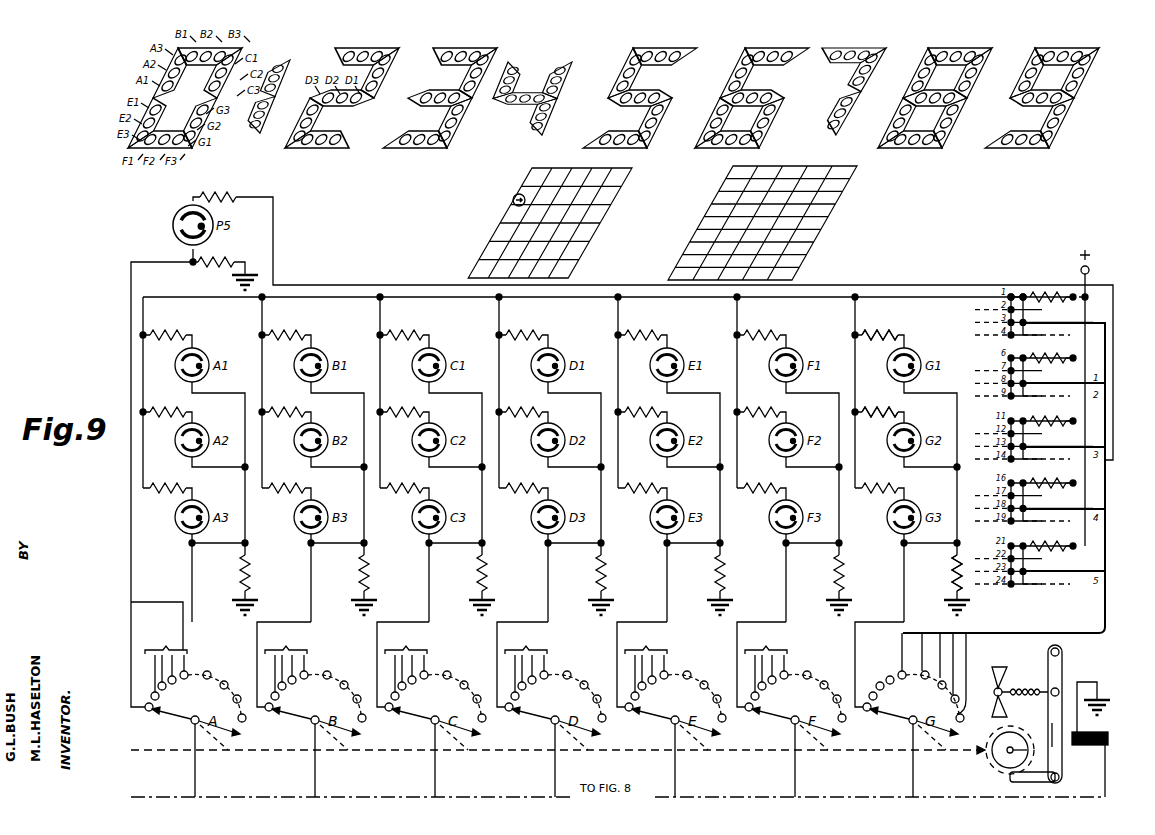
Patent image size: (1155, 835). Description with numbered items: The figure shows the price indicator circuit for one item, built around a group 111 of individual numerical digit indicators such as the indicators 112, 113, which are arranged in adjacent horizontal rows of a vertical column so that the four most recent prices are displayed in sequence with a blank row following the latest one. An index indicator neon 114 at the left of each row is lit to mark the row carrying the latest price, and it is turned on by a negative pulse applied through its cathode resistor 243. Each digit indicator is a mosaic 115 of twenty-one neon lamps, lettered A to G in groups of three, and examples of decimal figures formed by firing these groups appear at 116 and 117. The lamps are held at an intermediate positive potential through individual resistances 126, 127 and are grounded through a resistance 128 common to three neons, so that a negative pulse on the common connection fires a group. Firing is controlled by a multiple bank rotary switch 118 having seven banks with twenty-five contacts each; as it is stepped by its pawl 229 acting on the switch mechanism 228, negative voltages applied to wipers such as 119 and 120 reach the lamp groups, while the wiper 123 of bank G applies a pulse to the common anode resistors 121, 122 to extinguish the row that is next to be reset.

The group of individual numerical digit indicators 111 is at (550, 215).
The digit indicator 112 is at (630, 174).
The digit indicator 113 is at (576, 196).
The index indicator neon 114 is at (512, 199).
The digit indicator mosaic 115 is at (838, 210).
The mosaic decimal figure 116 is at (395, 150).
The mosaic decimal figure 117 is at (410, 150).
The multiple bank rotary switch 118 is at (963, 756).
The wiper 119 is at (170, 711).
The wiper 120 is at (290, 711).
The common anode resistor 121 is at (1040, 310).
The common anode resistor 122 is at (1040, 372).
The wiper 123 is at (888, 711).
The 33K resistance 126 is at (879, 330).
The 33K resistance 127 is at (869, 409).
The 16K resistance 128 is at (948, 574).
The rotary stepping indicator sequence switch mechanism 228 is at (1104, 728).
The pawl 229 is at (1066, 766).
The cathode resistor 243 is at (213, 261).